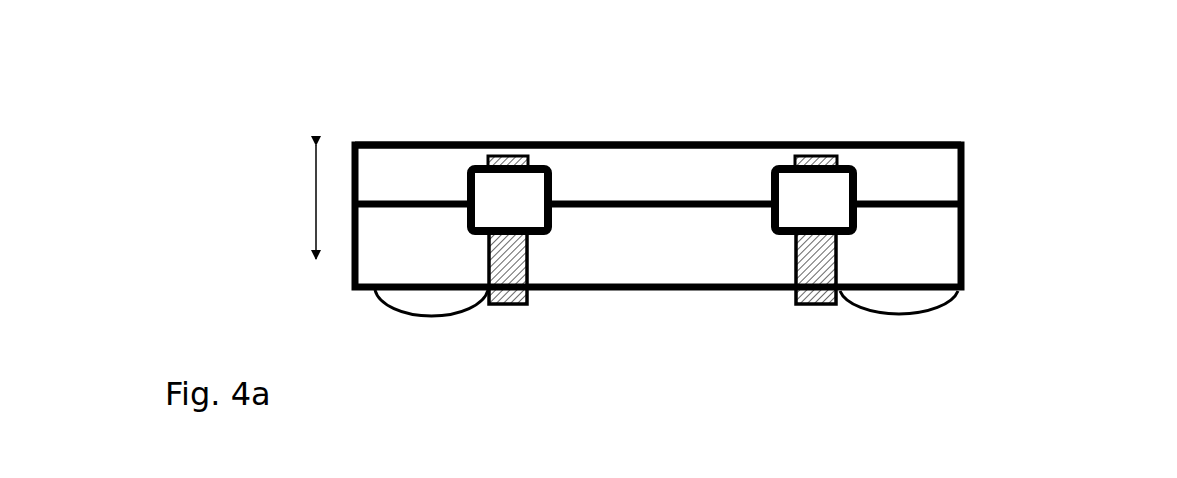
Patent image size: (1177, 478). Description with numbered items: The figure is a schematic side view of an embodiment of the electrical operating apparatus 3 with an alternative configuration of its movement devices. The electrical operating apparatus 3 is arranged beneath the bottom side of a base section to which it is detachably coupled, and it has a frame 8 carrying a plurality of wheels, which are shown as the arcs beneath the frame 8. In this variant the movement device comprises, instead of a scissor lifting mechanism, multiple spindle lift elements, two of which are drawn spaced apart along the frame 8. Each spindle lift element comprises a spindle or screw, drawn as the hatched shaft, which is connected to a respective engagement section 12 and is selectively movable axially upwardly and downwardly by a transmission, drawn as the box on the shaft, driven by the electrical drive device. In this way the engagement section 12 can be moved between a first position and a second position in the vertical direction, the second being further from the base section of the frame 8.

The electrical operating apparatus 3 is at (1068, 102).
The frame 8 is at (942, 245).
The engagement section 12 is at (940, 170).